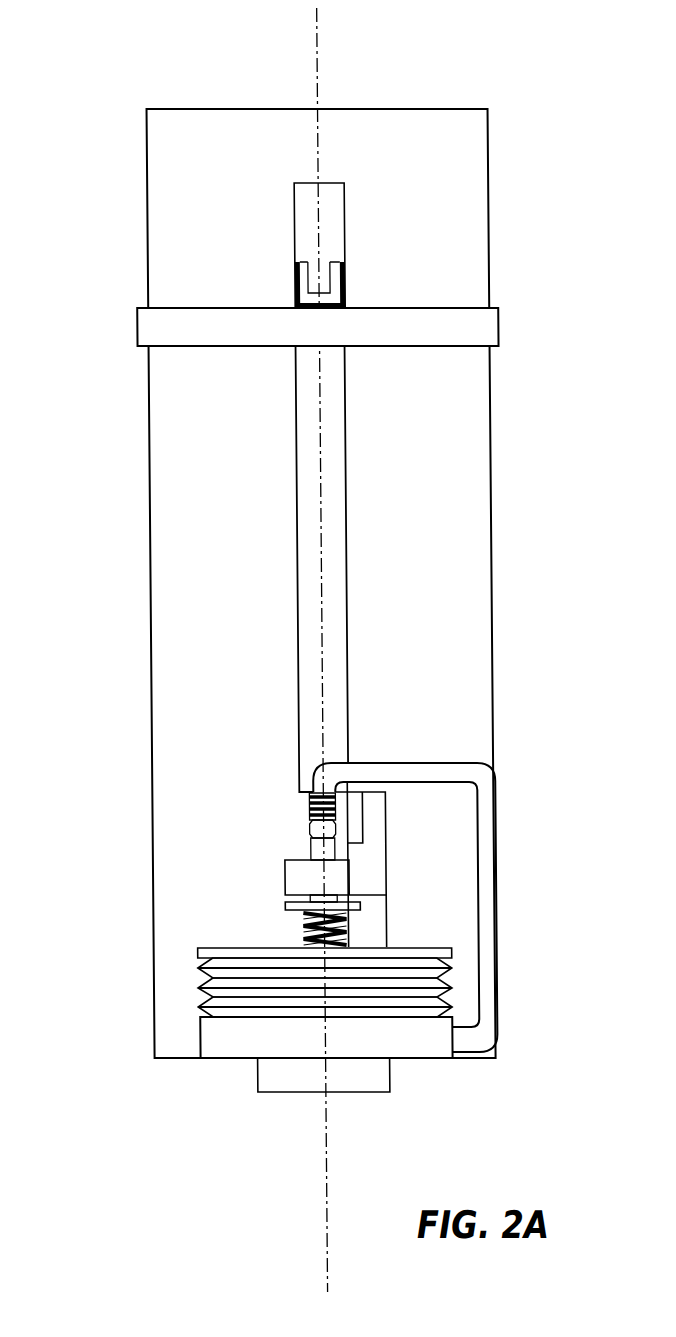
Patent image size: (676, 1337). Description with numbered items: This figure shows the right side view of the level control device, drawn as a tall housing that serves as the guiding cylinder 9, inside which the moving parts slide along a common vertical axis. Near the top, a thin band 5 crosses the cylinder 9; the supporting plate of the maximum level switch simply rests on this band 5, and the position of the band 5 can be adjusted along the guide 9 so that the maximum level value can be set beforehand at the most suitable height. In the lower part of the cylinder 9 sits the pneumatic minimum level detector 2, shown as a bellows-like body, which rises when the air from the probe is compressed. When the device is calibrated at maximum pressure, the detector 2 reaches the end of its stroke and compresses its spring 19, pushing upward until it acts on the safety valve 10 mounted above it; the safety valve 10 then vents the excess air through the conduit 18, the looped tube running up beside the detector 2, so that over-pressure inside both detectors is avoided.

The minimum level detector 2 is at (198, 968).
The thin band 5 is at (480, 327).
The guiding cylinder 9 is at (149, 770).
The safety valve 10 is at (308, 808).
The conduit 18 is at (469, 765).
The spring 19 is at (300, 937).